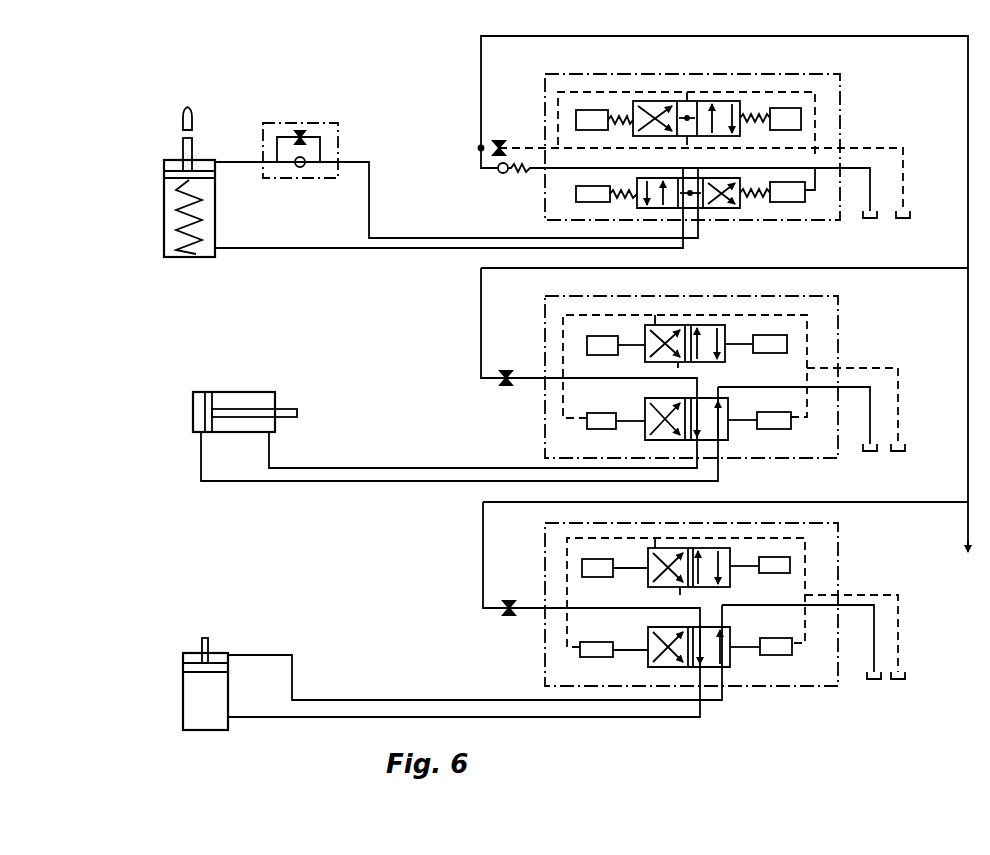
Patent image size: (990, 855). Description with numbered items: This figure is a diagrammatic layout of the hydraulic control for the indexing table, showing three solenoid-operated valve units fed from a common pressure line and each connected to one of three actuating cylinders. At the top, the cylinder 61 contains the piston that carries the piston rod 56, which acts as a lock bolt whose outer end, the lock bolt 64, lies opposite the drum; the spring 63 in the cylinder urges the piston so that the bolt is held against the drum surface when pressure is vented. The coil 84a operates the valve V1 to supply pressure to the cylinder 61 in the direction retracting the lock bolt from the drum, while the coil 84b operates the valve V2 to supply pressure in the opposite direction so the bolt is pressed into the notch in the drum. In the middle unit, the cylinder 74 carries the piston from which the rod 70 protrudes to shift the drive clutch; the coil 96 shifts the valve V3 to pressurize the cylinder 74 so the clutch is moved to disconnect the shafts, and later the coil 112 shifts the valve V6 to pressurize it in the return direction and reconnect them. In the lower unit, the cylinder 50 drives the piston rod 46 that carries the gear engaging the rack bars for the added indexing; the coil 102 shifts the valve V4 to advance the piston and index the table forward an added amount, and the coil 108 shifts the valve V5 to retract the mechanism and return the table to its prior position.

The piston rod 46 is at (207, 649).
The cylinder 50 is at (186, 689).
The piston rod 56 is at (182, 150).
The cylinder 61 is at (164, 206).
The spring 63 is at (180, 231).
The lock bolt 64 is at (194, 124).
The rod 70 is at (292, 411).
The cylinder 74 is at (200, 426).
The coil 84a is at (576, 194).
The coil 84b is at (791, 203).
The coil 96 is at (591, 428).
The coil 102 is at (580, 651).
The coil 108 is at (775, 656).
The coil 112 is at (769, 429).
The valve V1 is at (640, 200).
The valve V2 is at (726, 210).
The valve V3 is at (645, 440).
The valve V4 is at (648, 657).
The valve V5 is at (730, 646).
The valve V6 is at (729, 412).